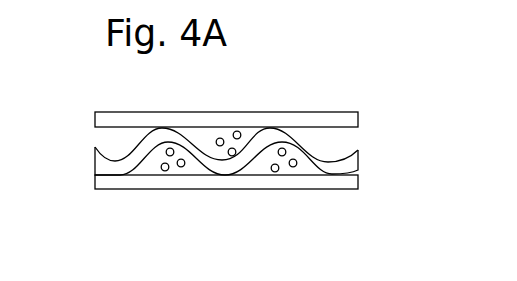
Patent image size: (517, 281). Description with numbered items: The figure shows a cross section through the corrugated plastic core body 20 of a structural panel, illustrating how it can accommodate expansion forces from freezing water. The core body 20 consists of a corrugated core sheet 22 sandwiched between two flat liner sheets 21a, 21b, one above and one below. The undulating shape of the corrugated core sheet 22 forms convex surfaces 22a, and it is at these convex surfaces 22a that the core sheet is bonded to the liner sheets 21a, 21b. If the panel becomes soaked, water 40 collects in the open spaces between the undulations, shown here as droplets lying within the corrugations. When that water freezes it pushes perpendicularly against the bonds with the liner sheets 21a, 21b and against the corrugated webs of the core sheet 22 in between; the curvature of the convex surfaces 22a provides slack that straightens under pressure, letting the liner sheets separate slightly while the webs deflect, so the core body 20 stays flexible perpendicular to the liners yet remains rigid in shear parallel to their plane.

The core body 20 is at (75, 113).
The liner sheet 21a is at (358, 113).
The liner sheet 21b is at (303, 190).
The corrugated core sheet 22 is at (380, 160).
The convex surfaces 22a is at (170, 118).
The water 40 is at (190, 167).